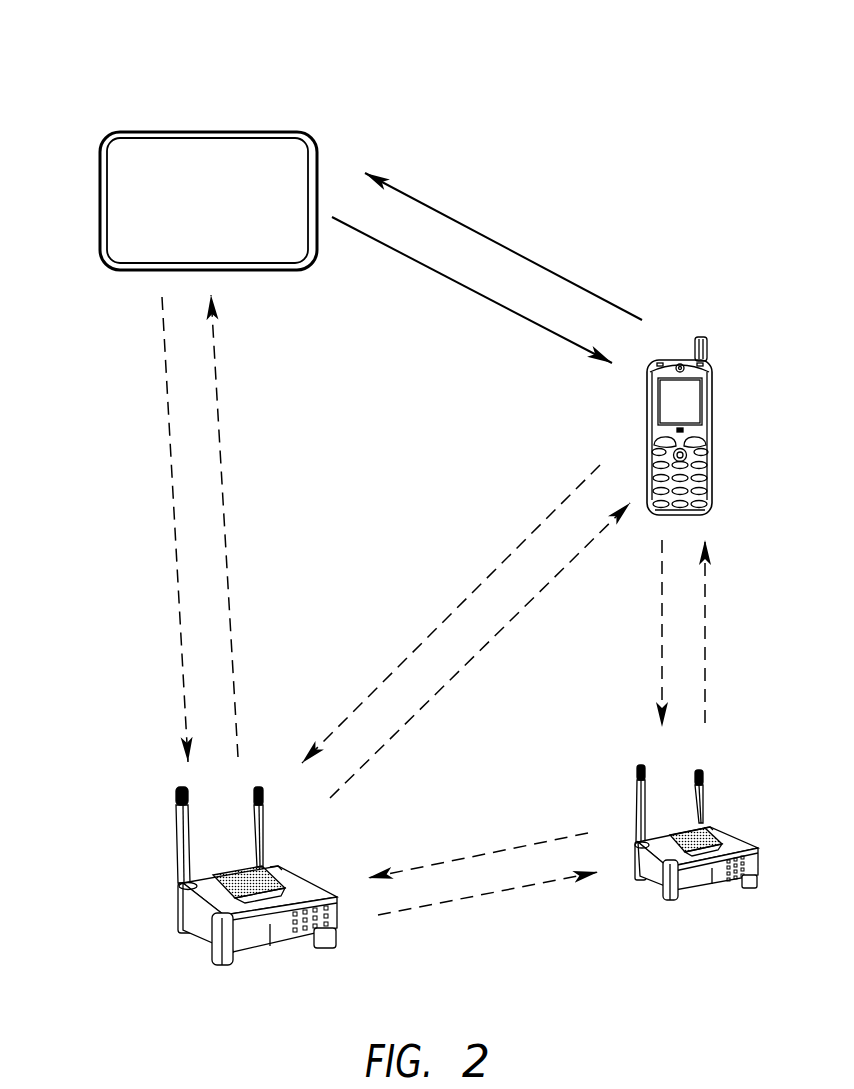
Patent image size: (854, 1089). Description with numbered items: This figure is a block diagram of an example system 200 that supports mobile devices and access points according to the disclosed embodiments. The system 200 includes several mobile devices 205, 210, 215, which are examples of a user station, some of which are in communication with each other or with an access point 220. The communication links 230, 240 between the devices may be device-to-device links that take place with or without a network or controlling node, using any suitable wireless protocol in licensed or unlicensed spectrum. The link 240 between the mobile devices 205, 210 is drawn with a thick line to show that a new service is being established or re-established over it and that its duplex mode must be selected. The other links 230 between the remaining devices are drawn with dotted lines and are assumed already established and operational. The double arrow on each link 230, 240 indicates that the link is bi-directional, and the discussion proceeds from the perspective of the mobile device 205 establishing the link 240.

The system 200 is at (768, 47).
The mobile device 205 is at (207, 131).
The mobile device 210 is at (712, 436).
The mobile device 215 is at (705, 790).
The access point 220 is at (177, 852).
The communication link 230 is at (135, 537).
The communication link 240 is at (438, 183).